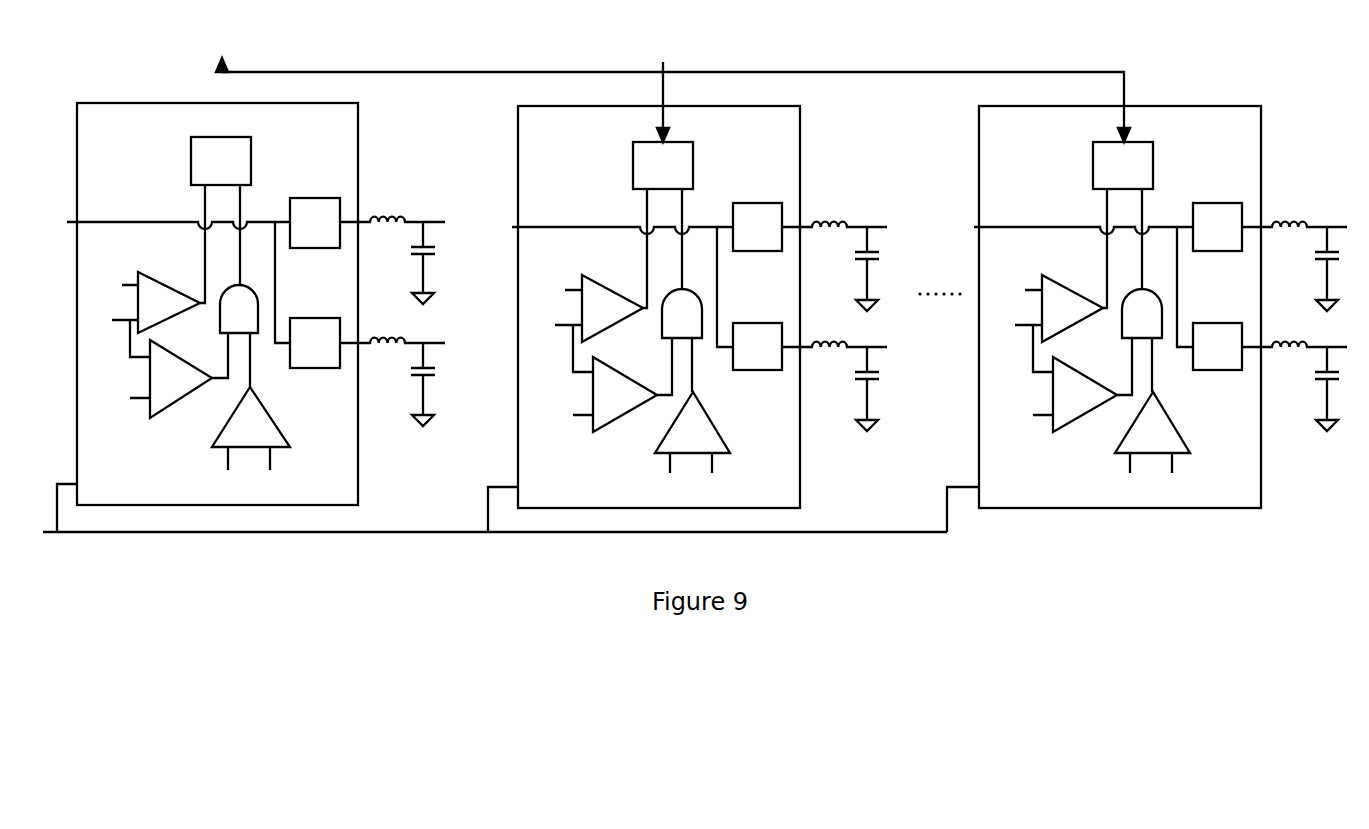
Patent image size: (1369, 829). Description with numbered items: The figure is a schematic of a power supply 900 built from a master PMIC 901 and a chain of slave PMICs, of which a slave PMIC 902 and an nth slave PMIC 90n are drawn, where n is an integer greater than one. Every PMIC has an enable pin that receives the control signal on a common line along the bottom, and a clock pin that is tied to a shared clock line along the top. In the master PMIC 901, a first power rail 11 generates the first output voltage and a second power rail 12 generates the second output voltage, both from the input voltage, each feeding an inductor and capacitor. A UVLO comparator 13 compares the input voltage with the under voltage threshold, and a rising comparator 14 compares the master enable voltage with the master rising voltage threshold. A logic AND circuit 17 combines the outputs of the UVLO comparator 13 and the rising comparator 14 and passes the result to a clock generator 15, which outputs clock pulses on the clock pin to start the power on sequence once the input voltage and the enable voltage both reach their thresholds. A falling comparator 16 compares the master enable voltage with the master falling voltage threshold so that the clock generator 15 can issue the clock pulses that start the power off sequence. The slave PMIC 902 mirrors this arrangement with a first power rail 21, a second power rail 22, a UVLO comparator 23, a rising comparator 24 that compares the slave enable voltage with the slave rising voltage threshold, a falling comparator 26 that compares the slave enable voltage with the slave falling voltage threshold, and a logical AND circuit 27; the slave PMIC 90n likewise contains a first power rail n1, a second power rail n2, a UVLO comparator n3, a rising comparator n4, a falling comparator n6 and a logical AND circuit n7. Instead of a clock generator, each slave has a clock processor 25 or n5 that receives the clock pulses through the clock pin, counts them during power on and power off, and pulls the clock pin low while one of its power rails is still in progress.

The power supply 900 is at (107, 36).
The master PMIC 901 is at (252, 317).
The slave PMIC 902 is at (722, 319).
The slave PMIC 90n is at (1157, 319).
The first power rail 11 is at (315, 223).
The second power rail 12 is at (315, 343).
The UVLO comparator 13 is at (251, 428).
The rising comparator 14 is at (179, 369).
The clock generator 15 is at (221, 220).
The falling comparator 16 is at (156, 302).
The logic AND circuit 17 is at (239, 336).
The first power rail 21 is at (757, 227).
The second power rail 22 is at (757, 346).
The UVLO comparator 23 is at (692, 432).
The rising comparator 24 is at (622, 378).
The clock processor 25 is at (663, 225).
The falling comparator 26 is at (599, 308).
The logical AND circuit 27 is at (682, 340).
The first power rail n1 is at (1217, 227).
The second power rail n2 is at (1217, 346).
The UVLO comparator n3 is at (1152, 432).
The rising comparator n4 is at (1082, 378).
The clock processor n5 is at (1123, 225).
The falling comparator n6 is at (1059, 308).
The logical AND circuit n7 is at (1142, 340).